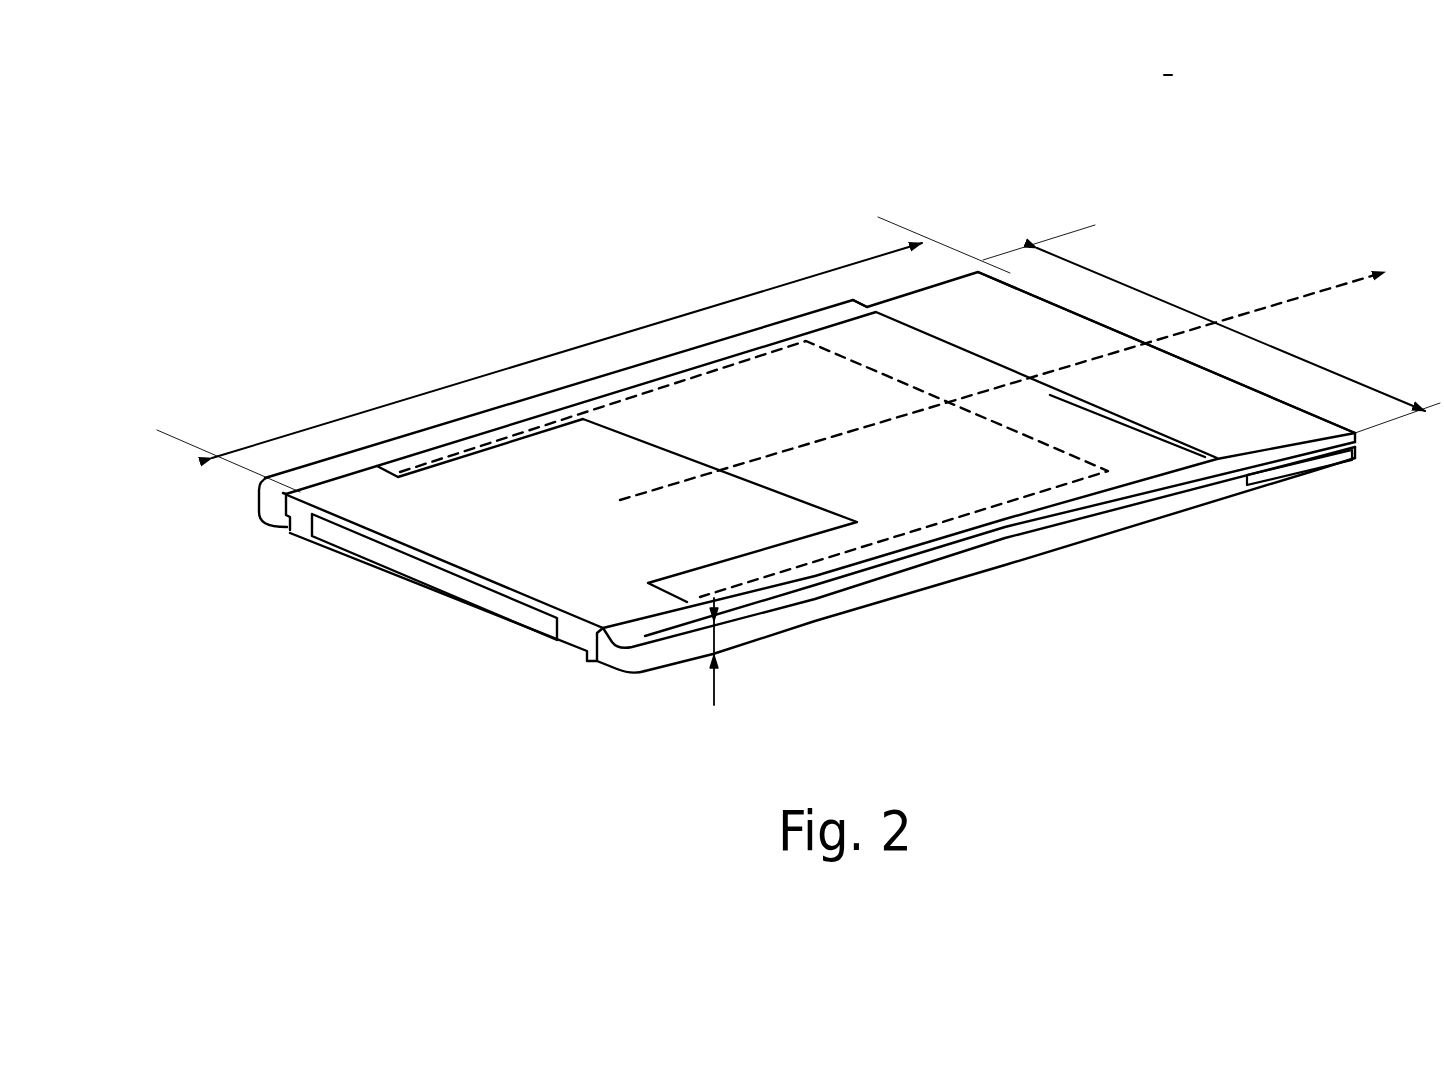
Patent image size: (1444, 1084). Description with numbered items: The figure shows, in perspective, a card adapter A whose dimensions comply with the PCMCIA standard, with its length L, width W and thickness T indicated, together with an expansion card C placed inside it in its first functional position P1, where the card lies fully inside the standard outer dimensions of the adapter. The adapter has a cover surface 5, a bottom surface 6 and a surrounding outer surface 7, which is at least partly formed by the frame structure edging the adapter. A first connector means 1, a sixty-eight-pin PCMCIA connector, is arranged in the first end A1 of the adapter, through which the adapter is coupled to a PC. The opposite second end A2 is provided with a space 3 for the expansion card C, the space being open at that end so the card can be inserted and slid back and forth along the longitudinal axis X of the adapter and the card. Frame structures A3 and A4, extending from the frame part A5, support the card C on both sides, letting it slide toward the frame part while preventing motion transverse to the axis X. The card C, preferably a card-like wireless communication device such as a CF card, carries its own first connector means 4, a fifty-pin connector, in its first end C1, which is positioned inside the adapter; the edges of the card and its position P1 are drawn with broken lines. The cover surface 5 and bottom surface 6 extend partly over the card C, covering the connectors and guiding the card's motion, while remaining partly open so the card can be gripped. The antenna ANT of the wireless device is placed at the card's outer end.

The first connector means 1 is at (1340, 415).
The space 3 is at (590, 462).
The first connector means 4 is at (903, 375).
The cover surface 5 is at (1010, 318).
The bottom surface 6 is at (1013, 563).
The outer surface 7 is at (930, 576).
The card adapter A is at (777, 158).
The first end A1 is at (1343, 474).
The second end A2 is at (285, 455).
The frame structure A3 is at (417, 442).
The frame structure A4 is at (752, 603).
The frame part A5 is at (1190, 398).
The antenna ANT is at (355, 547).
The expansion card C is at (513, 550).
The first end C1 is at (733, 390).
The first functional position P1 is at (1053, 445).
The longitudinal axis X is at (1310, 287).
The length L is at (627, 336).
The width W is at (1130, 287).
The thickness T is at (716, 690).